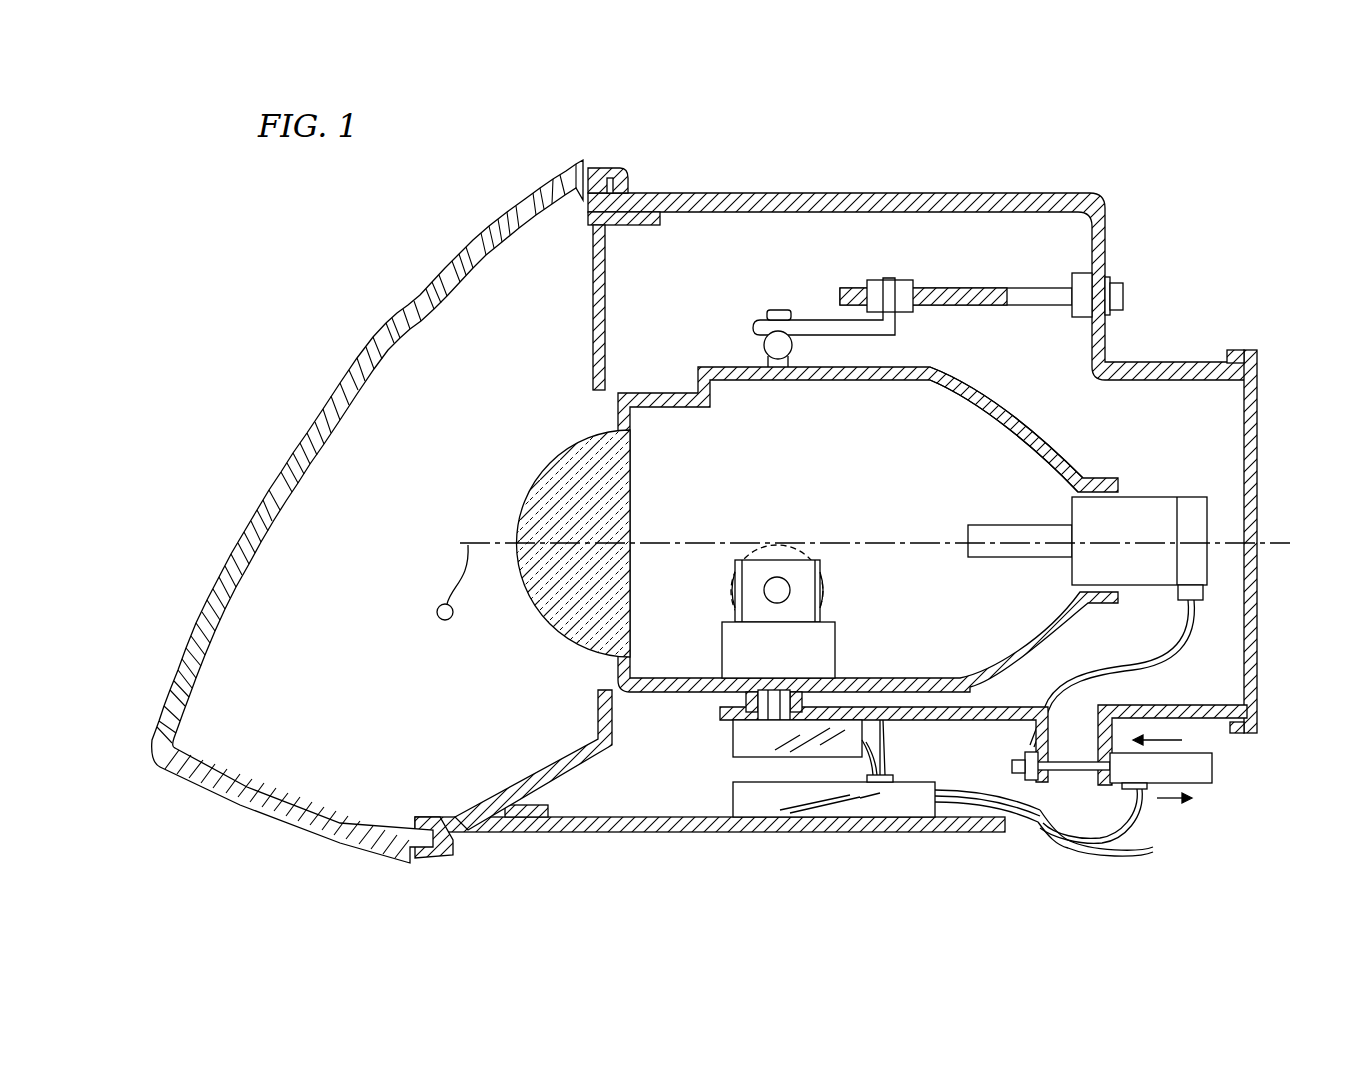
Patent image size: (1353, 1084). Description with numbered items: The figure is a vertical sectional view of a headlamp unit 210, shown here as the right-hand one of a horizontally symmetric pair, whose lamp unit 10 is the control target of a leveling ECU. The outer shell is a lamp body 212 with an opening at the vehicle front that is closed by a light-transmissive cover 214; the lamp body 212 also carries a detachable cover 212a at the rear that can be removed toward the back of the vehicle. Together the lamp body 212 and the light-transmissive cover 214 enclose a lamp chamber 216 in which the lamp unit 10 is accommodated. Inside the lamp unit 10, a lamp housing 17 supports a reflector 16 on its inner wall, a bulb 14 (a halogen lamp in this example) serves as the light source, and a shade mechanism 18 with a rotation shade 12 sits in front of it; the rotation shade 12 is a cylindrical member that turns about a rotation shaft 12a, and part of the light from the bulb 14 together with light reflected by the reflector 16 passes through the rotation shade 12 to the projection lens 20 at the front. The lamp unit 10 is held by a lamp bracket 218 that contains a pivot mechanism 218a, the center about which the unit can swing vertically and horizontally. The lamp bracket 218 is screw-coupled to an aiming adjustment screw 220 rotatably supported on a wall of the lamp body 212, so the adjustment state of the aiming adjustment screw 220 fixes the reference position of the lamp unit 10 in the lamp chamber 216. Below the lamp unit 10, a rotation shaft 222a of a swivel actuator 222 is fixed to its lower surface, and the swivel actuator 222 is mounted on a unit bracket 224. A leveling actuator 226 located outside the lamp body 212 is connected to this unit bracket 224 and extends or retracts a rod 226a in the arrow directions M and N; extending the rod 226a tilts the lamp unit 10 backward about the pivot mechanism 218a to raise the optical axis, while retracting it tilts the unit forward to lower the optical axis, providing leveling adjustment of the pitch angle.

The lamp unit 10 is at (665, 392).
The rotation shade 12 is at (786, 550).
The rotation shaft 12a is at (786, 591).
The bulb 14 is at (1005, 530).
The reflector 16 is at (935, 382).
The lamp housing 17 is at (1020, 405).
The shade mechanism 18 is at (777, 545).
The projection lens 20 is at (565, 458).
The headlamp unit 210 is at (721, 489).
The lamp body 212 is at (800, 193).
The detachable cover 212a is at (1238, 350).
The light-transmissive cover 214 is at (422, 300).
The lamp chamber 216 is at (536, 344).
The lamp bracket 218 is at (822, 325).
The pivot mechanism 218a is at (768, 345).
The aiming adjustment screw 220 is at (1032, 298).
The swivel actuator 222 is at (735, 740).
The rotation shaft 222a is at (760, 702).
The unit bracket 224 is at (915, 720).
The leveling actuator 226 is at (1203, 770).
The rod 226a is at (1065, 752).